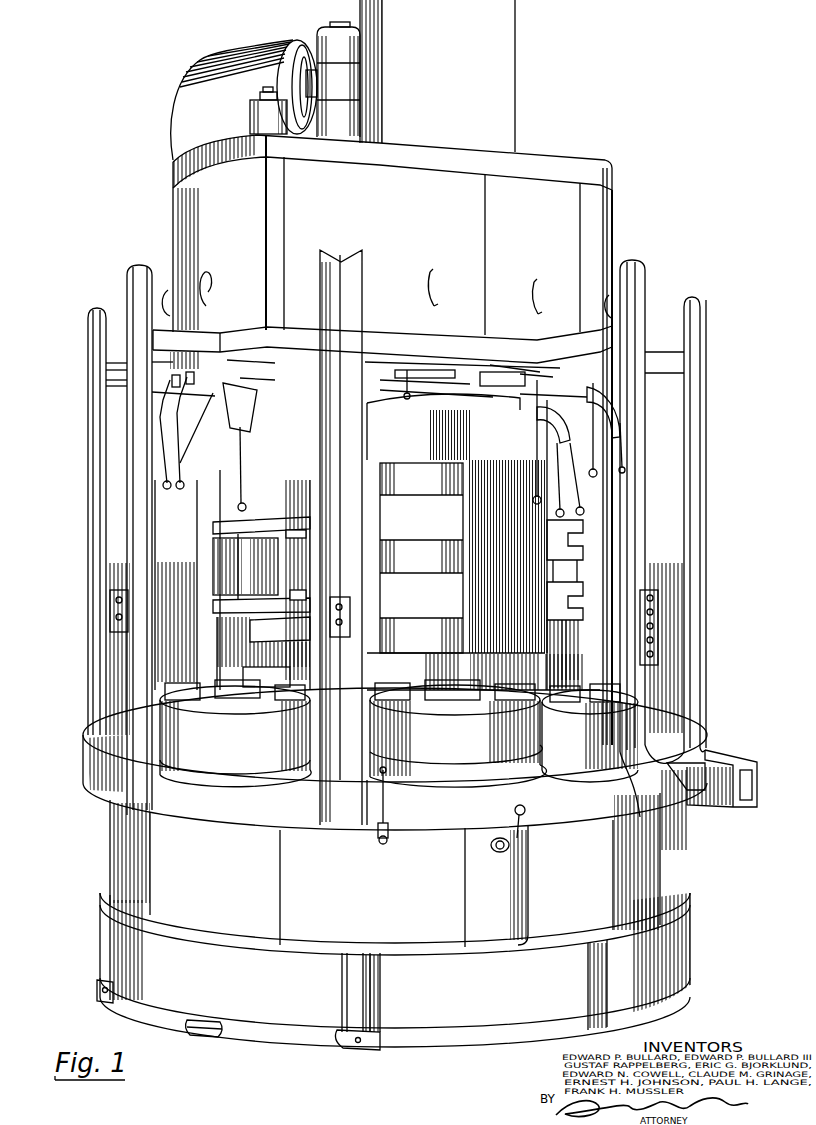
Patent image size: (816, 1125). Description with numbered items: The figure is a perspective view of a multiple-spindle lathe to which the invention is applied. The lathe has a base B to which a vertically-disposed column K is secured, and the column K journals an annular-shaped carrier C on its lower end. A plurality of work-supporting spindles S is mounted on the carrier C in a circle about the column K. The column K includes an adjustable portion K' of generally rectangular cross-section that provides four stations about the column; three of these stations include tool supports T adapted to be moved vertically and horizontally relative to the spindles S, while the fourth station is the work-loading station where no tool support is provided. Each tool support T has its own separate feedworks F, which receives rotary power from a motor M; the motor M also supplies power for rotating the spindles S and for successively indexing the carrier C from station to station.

The motor M is at (185, 135).
The feedworks F is at (628, 241).
The column K is at (420, 537).
The adjustable portion of the column K' is at (483, 490).
The tool supports T is at (235, 568).
The work-supporting spindles S is at (455, 732).
The carrier C is at (312, 770).
The base B is at (272, 1020).